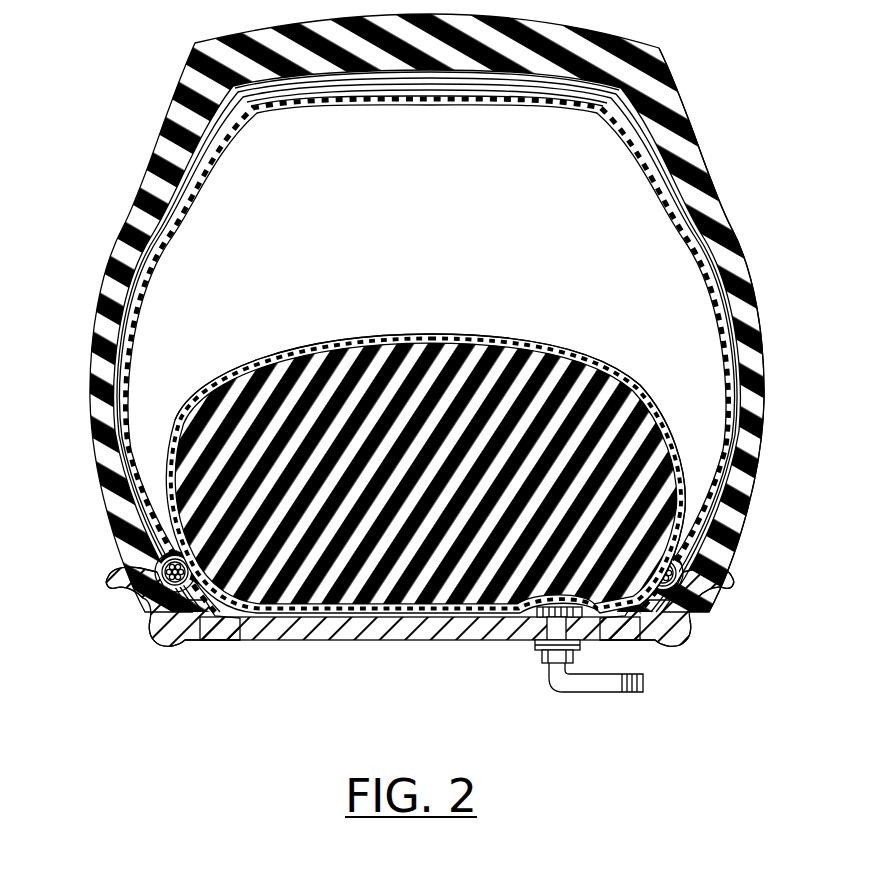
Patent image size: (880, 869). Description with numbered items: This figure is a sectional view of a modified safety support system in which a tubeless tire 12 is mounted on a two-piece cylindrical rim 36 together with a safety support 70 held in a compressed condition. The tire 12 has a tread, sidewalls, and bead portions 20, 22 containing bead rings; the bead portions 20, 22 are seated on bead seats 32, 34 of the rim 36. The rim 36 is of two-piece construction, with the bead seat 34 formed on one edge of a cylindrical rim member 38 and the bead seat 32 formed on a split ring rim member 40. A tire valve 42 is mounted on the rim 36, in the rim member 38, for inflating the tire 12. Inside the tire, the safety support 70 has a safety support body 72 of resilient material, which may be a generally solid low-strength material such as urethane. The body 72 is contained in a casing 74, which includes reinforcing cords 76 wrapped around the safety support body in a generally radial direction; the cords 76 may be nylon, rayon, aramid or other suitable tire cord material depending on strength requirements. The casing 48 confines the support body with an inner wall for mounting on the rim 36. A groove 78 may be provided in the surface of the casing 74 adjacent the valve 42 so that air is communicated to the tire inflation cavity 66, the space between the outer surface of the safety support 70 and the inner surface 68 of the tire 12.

The tubeless tire 12 is at (682, 108).
The tire inflation cavity 66 is at (547, 222).
The inner surface of the tire 68 is at (453, 97).
The bead portion 22 is at (727, 507).
The bead portion 20 is at (133, 537).
The rim 36 is at (388, 628).
The split ring rim member 40 is at (145, 597).
The bead seat 32 is at (178, 648).
The bead seat 34 is at (668, 600).
The cylindrical rim member 38 is at (633, 623).
The safety support 70 is at (440, 434).
The safety support body 72 is at (603, 393).
The casing 74 is at (650, 400).
The reinforcing cords 76 is at (672, 433).
The casing 48 is at (313, 342).
The groove 78 is at (607, 617).
The tire valve 42 is at (593, 687).